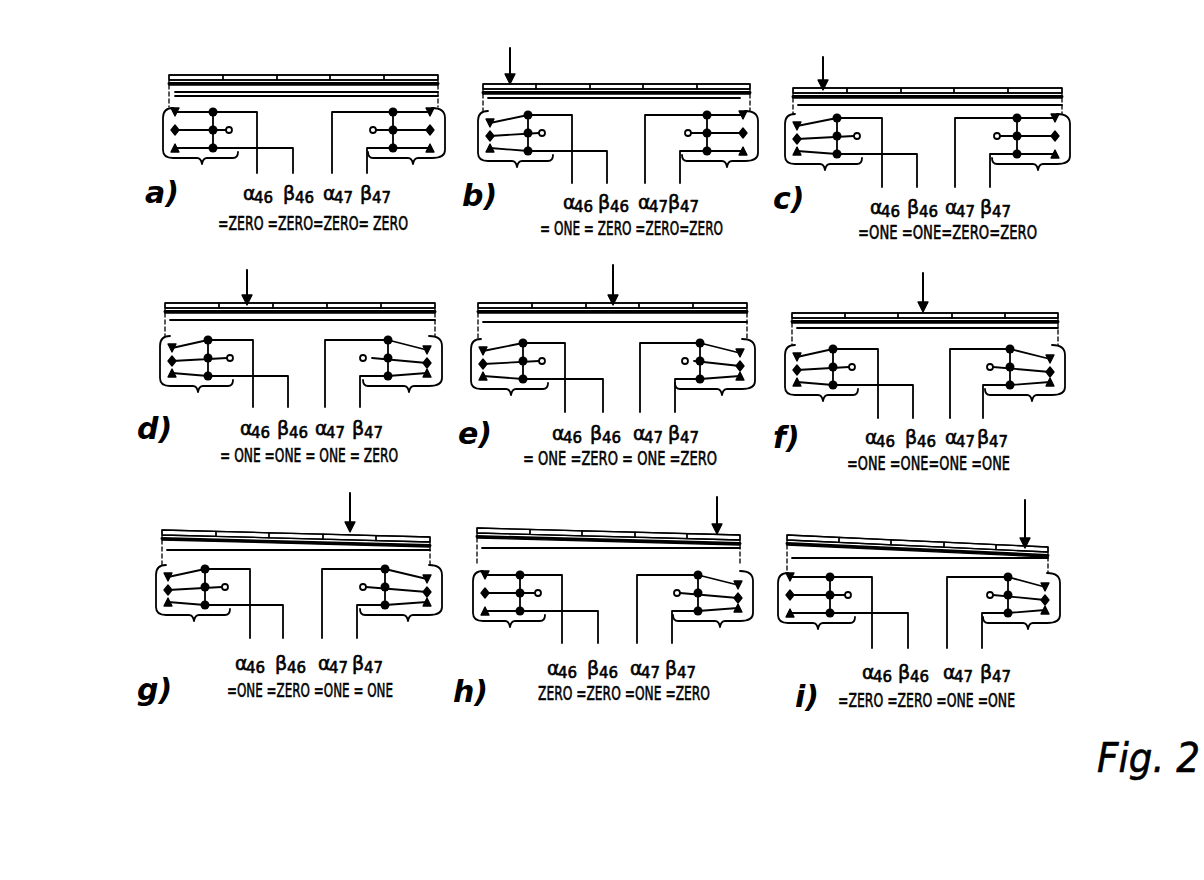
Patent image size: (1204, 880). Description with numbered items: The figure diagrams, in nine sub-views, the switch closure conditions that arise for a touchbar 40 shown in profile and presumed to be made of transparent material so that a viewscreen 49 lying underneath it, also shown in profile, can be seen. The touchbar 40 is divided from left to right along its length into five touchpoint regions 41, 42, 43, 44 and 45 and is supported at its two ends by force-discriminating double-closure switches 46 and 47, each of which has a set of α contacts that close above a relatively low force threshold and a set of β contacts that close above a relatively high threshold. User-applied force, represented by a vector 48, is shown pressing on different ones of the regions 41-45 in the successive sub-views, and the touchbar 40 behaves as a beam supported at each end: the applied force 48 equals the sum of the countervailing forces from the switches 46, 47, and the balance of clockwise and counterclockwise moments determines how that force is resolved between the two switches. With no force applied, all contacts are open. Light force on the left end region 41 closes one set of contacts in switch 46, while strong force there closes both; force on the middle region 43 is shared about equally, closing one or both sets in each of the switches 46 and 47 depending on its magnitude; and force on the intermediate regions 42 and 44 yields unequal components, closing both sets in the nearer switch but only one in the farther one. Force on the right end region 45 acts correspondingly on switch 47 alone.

The touchbar 40 is at (445, 50).
The left end touchpoint region 41 is at (199, 74).
The touchpoint region 42 is at (249, 74).
The middle touchpoint region 43 is at (307, 74).
The touchpoint region 44 is at (360, 74).
The right end touchpoint region 45 is at (415, 74).
The double-closure switch 46 is at (190, 194).
The double-closure switch 47 is at (403, 196).
The user-applied force vector 48 is at (508, 55).
The viewscreen 49 is at (310, 97).